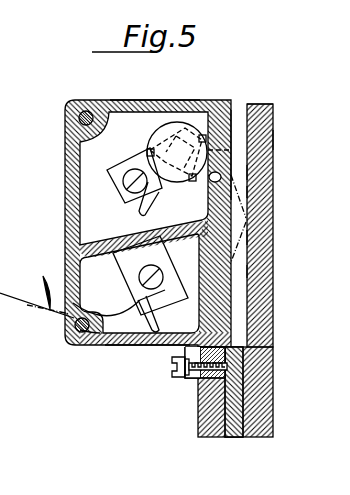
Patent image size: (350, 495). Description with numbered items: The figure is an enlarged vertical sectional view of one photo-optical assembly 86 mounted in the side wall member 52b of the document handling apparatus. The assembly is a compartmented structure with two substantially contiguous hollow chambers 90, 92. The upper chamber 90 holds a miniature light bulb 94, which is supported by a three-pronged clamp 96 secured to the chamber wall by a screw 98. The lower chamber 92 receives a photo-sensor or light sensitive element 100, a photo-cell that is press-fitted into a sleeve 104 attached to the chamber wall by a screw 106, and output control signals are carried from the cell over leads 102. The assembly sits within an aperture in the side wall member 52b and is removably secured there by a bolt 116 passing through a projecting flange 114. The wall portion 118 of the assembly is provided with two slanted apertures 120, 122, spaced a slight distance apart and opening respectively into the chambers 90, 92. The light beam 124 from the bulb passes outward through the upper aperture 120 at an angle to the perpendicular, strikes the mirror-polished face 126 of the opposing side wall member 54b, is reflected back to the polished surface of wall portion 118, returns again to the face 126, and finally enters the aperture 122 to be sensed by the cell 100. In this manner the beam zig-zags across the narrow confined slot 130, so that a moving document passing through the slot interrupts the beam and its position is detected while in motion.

The photo-optical assembly 86 is at (100, 98).
The hollow chamber 90 is at (145, 118).
The hollow chamber 92 is at (118, 338).
The miniature light bulb 94 is at (185, 126).
The three-pronged clamp 96 is at (210, 110).
The screw 98 is at (127, 172).
The light sensitive element 100 is at (140, 298).
The leads 102 is at (37, 288).
The sleeve 104 is at (161, 338).
The screw 106 is at (150, 268).
The projecting flange 114 is at (195, 386).
The bolt 116 is at (176, 378).
The wall portion 118 is at (274, 138).
The aperture 120 is at (233, 168).
The aperture 122 is at (231, 270).
The light beam 124 is at (241, 188).
The face 126 is at (246, 243).
The slot 130 is at (275, 107).
The side wall member 54b is at (273, 213).
The side wall member 52b is at (215, 412).